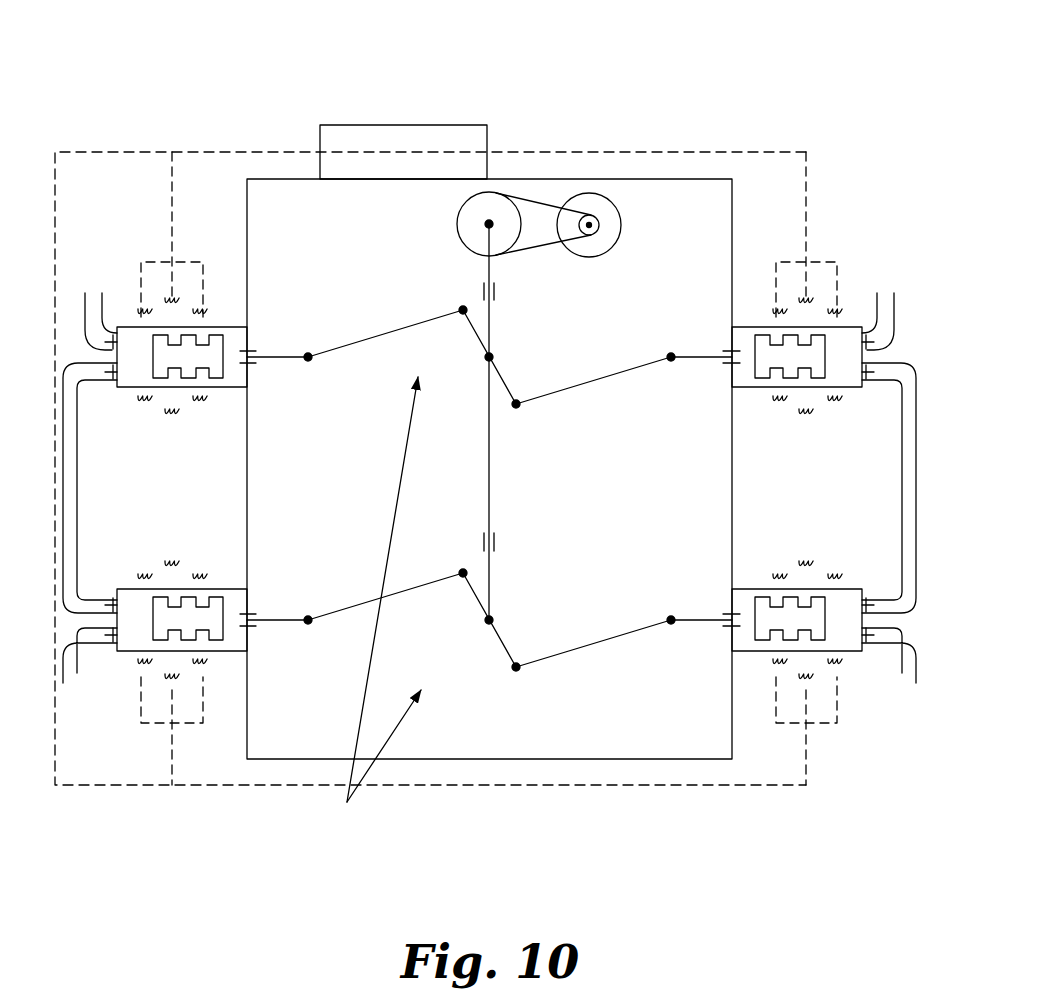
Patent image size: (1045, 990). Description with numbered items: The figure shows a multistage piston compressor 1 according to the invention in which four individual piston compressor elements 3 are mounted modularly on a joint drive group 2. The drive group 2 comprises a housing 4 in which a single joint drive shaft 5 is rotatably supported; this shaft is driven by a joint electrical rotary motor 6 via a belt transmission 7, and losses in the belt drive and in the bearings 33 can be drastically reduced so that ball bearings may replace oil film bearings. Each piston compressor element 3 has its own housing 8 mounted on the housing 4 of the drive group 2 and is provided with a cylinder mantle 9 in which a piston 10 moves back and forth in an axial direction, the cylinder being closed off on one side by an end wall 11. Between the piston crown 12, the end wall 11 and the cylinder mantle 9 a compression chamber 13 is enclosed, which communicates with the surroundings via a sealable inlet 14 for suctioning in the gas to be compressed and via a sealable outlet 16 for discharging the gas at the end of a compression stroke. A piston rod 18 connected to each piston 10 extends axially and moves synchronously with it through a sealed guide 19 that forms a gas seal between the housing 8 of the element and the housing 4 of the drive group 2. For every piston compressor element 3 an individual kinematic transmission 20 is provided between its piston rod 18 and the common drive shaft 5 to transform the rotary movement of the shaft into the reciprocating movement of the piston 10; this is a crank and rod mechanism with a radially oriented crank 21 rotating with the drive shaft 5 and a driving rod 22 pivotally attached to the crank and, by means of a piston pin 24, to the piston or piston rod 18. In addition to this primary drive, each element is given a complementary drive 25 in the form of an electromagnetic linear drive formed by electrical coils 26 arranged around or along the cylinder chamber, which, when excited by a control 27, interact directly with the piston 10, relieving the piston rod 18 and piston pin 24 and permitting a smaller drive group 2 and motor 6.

The piston compressor 1 is at (728, 60).
The drive group 2 is at (736, 498).
The piston compressor element 3 is at (126, 320).
The housing 4 is at (734, 527).
The drive shaft 5 is at (489, 224).
The electrical rotary motor 6 is at (621, 228).
The belt transmission 7 is at (530, 250).
The housing 8 is at (123, 387).
The cylinder mantle 9 is at (220, 387).
The piston 10 is at (218, 327).
The end wall 11 is at (112, 352).
The piston crown 12 is at (117, 387).
The compression chamber 13 is at (137, 333).
The sealable inlet 14 is at (62, 690).
The sealable outlet 16 is at (88, 302).
The piston rod 18 is at (280, 357).
The sealed guide 19 is at (252, 350).
The kinematic transmission 20 is at (371, 605).
The crank 21 is at (455, 580).
The driving rod 22 is at (394, 333).
The piston pin 24 is at (310, 350).
The complementary drive 25 is at (151, 248).
The electrical coils 26 is at (203, 404).
The control 27 is at (345, 125).
The bearings 33 is at (497, 290).